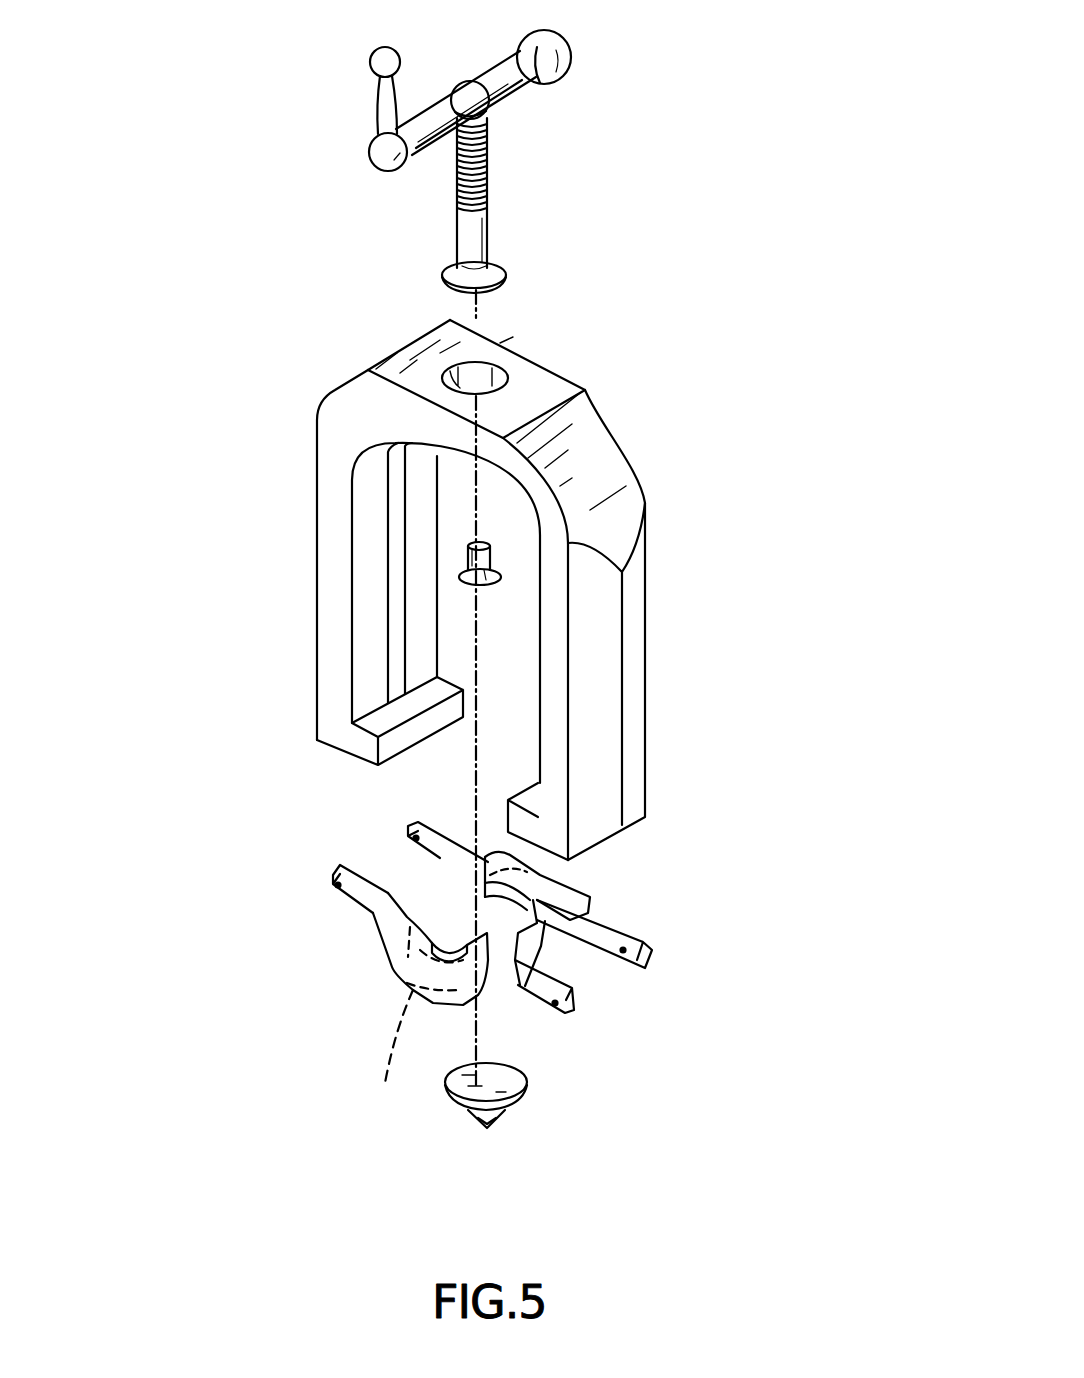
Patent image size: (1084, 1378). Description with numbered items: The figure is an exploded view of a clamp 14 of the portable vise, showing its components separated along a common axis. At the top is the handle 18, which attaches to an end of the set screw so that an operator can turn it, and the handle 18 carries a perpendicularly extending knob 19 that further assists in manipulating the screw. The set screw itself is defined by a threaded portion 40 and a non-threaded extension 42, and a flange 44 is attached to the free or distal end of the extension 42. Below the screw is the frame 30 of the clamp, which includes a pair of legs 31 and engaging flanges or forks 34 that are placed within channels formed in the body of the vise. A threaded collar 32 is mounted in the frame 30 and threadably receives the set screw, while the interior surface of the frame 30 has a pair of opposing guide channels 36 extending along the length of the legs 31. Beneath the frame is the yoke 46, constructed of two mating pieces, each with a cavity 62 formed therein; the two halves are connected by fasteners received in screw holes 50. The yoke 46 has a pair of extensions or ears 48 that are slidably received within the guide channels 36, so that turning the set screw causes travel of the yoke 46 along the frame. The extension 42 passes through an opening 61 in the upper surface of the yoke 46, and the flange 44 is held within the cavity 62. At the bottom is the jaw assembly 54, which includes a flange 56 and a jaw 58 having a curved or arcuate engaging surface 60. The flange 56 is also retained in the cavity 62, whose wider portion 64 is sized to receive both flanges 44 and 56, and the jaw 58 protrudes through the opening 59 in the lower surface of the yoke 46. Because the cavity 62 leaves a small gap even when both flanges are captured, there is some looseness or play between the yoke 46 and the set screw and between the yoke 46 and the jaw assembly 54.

The clamp 14 is at (650, 414).
The handle 18 is at (483, 47).
The knob 19 is at (385, 96).
The frame 30 is at (618, 482).
The legs 31 is at (330, 534).
The threaded collar 32 is at (502, 594).
The engaging flanges or forks 34 is at (358, 748).
The guide channels 36 is at (398, 568).
The threaded portion 40 is at (492, 160).
The non-threaded extension 42 is at (490, 232).
The flange 44 is at (500, 273).
The yoke 46 is at (370, 956).
The ears 48 is at (264, 950).
The screw holes 50 is at (425, 852).
The jaw assembly 54 is at (537, 1086).
The flange 56 is at (450, 1080).
The jaw 58 is at (492, 1122).
The opening 59 is at (530, 953).
The engaging surface 60 is at (480, 1120).
The opening 61 is at (562, 880).
The cavity 62 is at (515, 987).
The wider portion 64 is at (478, 907).